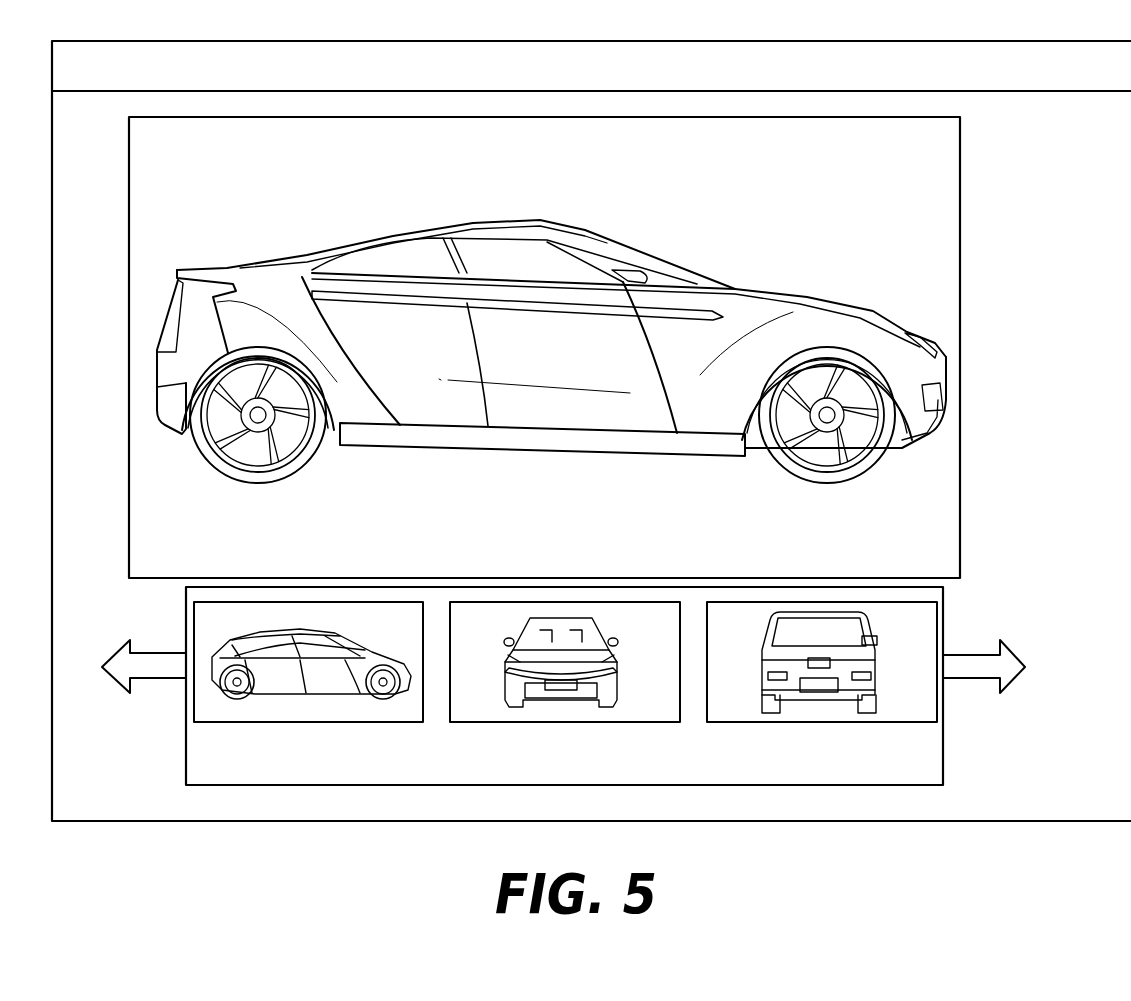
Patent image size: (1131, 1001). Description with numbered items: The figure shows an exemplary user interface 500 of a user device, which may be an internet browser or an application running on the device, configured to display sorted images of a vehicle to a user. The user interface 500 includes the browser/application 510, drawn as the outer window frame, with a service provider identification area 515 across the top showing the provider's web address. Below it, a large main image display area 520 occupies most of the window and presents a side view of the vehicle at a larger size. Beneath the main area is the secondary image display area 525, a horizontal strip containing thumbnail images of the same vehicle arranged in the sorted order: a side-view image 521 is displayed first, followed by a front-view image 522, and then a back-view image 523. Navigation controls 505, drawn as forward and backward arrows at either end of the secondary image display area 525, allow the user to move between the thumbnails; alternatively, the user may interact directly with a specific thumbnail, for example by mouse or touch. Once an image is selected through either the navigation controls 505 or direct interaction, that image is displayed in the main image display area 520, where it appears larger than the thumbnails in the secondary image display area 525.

The user interface 500 is at (692, 25).
The navigation controls 505 is at (118, 650).
The browser/application 510 is at (963, 41).
The service provider identification area 515 is at (356, 71).
The main image display area 520 is at (975, 333).
The side-view image 521 is at (300, 723).
The front-view image 522 is at (557, 723).
The back-view image 523 is at (815, 723).
The secondary image display area 525 is at (955, 746).